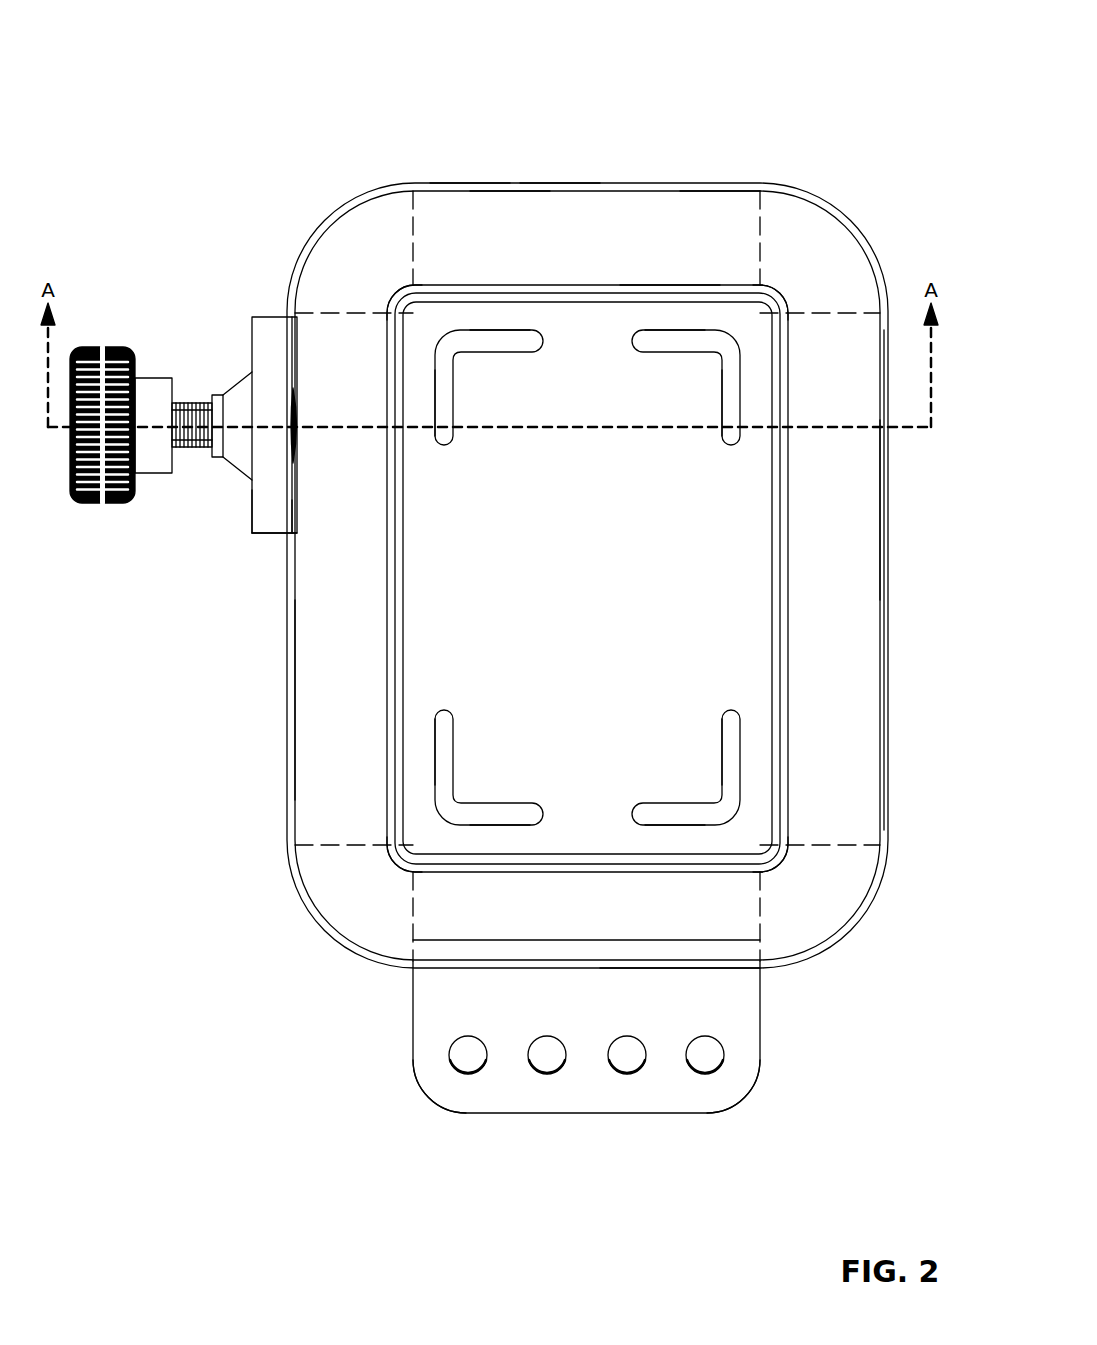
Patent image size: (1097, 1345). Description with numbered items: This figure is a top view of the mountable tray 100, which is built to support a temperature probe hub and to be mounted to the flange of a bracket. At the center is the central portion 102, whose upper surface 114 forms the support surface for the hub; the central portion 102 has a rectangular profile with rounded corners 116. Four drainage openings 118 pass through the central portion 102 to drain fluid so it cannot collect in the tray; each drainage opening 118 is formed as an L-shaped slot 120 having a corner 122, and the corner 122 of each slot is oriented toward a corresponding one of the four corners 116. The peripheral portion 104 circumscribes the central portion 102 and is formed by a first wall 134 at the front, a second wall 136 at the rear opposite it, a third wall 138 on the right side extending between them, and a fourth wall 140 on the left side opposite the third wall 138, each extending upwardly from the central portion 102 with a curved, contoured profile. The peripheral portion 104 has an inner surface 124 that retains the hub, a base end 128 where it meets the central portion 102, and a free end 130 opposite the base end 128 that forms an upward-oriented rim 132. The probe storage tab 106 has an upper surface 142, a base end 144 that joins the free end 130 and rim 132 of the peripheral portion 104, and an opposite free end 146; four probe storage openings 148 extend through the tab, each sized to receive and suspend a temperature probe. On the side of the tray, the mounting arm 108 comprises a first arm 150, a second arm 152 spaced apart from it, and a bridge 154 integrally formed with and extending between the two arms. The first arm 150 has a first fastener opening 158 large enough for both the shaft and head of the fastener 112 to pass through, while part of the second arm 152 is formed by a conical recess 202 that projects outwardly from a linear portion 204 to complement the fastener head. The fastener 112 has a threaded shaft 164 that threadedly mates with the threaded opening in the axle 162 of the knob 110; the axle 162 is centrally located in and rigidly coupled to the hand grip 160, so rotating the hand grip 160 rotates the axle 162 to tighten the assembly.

The mountable tray 100 is at (812, 38).
The central portion 102 is at (600, 590).
The peripheral portion 104 is at (625, 222).
The probe storage tab 106 is at (583, 1085).
The mounting arm 108 is at (240, 385).
The knob 110 is at (150, 416).
The fastener 112 is at (192, 403).
The upper surface 114 is at (605, 655).
The corners 116 is at (408, 295).
The drainage openings 118 is at (465, 322).
The L-shaped slot 120 is at (453, 418).
The corner 122 is at (463, 360).
The inner surface 124 is at (718, 222).
The base end 128 is at (668, 285).
The free end 130 is at (470, 183).
The rim 132 is at (562, 183).
The first wall 134 is at (495, 912).
The second wall 136 is at (513, 222).
The third wall 138 is at (835, 500).
The fourth wall 140 is at (320, 705).
The upper surface 142 is at (497, 1085).
The base end 144 is at (718, 965).
The free end 146 is at (657, 1113).
The probe storage openings 148 is at (466, 1074).
The first arm 150 is at (298, 533).
The second arm 152 is at (262, 533).
The bridge 154 is at (275, 317).
The first fastener opening 158 is at (298, 412).
The hand grip 160 is at (100, 503).
The axle 162 is at (150, 378).
The threaded shaft 164 is at (190, 447).
The recess 202 is at (221, 395).
The linear portion 204 is at (252, 500).